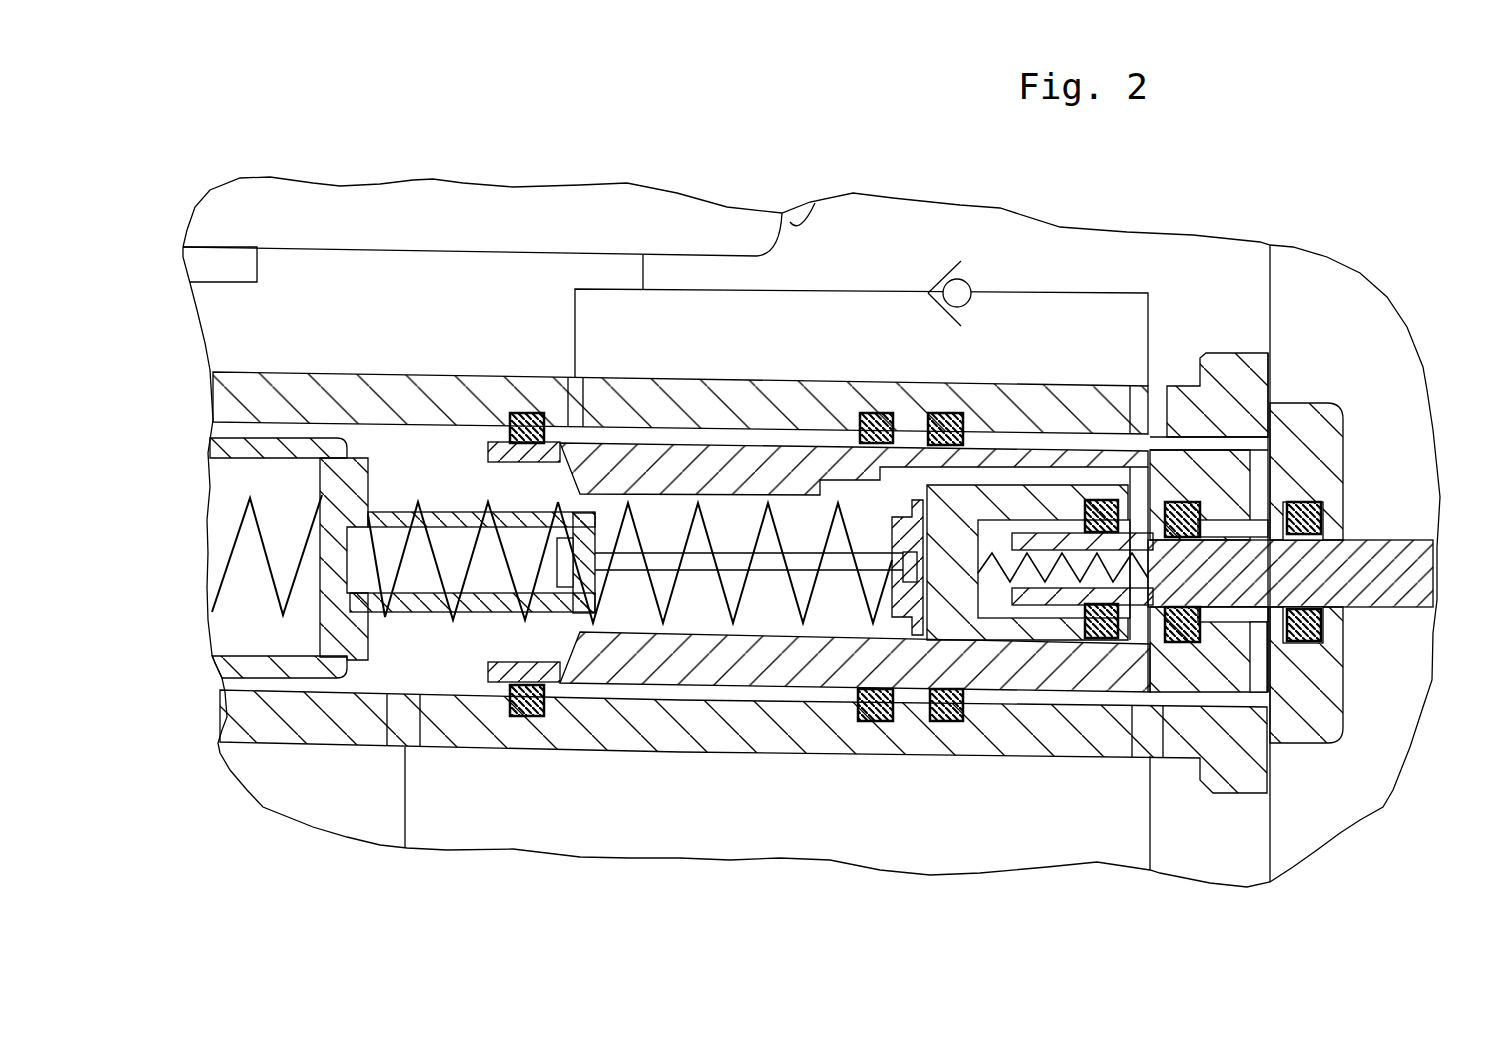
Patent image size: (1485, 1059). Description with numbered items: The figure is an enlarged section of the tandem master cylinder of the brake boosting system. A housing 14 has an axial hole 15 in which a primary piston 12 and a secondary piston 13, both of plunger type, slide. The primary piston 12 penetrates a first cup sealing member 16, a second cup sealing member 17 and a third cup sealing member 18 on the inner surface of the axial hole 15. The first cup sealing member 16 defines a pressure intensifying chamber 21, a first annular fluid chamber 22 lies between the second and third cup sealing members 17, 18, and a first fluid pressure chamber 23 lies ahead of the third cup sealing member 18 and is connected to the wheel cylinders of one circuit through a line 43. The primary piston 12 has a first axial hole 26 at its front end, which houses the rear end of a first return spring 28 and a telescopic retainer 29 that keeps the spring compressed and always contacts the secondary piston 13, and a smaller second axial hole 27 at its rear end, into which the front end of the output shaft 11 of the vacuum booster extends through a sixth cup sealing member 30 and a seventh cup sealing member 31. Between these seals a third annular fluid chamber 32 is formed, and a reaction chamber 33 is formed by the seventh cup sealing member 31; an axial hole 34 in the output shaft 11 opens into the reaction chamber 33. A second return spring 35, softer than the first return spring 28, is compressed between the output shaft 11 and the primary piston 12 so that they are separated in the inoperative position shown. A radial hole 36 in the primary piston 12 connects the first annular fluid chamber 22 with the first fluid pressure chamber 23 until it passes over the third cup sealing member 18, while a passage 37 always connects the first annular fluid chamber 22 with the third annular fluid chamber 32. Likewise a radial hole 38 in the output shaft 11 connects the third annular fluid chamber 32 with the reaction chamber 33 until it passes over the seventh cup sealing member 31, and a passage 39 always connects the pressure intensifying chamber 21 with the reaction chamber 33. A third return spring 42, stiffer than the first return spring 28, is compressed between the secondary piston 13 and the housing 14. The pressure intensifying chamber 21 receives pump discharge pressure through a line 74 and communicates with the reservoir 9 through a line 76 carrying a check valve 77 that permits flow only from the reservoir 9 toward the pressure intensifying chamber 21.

The reservoir 9 is at (790, 222).
The output shaft 11 is at (1398, 548).
The primary piston 12 is at (713, 660).
The secondary piston 13 is at (250, 666).
The housing 14 is at (360, 385).
The axial hole 15 is at (436, 430).
The first cup sealing member 16 is at (940, 722).
The second cup sealing member 17 is at (882, 722).
The third cup sealing member 18 is at (527, 720).
The pressure intensifying chamber 21 is at (1222, 520).
The first annular fluid chamber 22 is at (770, 440).
The first fluid pressure chamber 23 is at (467, 432).
The first axial hole 26 is at (790, 625).
The second axial hole 27 is at (1010, 620).
The first return spring 28 is at (648, 572).
The telescopic retainer 29 is at (617, 567).
The sixth cup sealing member 30 is at (1192, 505).
The seventh cup sealing member 31 is at (1090, 605).
The third annular fluid chamber 32 is at (1180, 642).
The reaction chamber 33 is at (1040, 606).
The axial hole 34 is at (1043, 555).
The second return spring 35 is at (1000, 555).
The radial hole 36 is at (549, 462).
The passage 37 is at (918, 470).
The radial hole 38 is at (1100, 641).
The passage 39 is at (1325, 618).
The third return spring 42 is at (232, 545).
The line 43 is at (407, 800).
The line 74 is at (1152, 805).
The line 76 is at (852, 289).
The check valve 77 is at (968, 284).